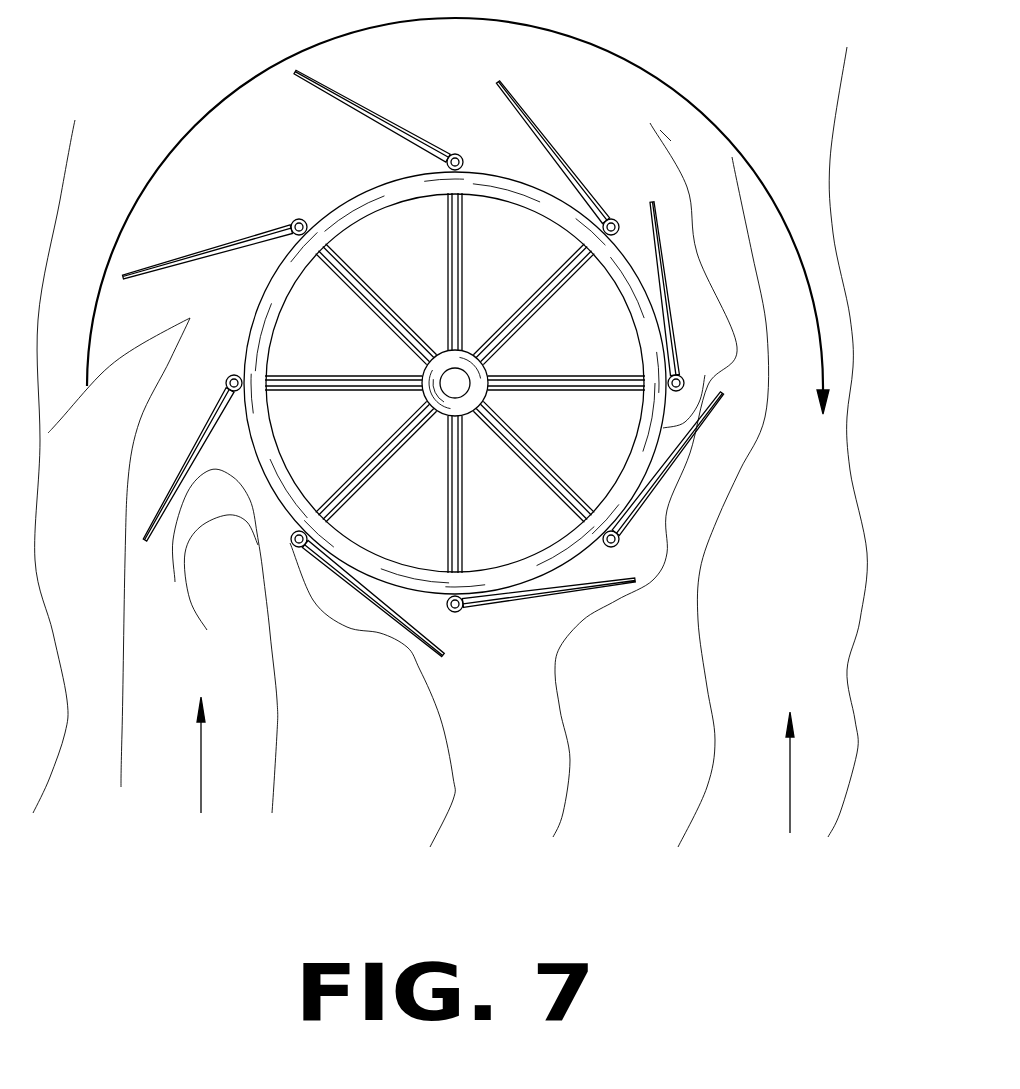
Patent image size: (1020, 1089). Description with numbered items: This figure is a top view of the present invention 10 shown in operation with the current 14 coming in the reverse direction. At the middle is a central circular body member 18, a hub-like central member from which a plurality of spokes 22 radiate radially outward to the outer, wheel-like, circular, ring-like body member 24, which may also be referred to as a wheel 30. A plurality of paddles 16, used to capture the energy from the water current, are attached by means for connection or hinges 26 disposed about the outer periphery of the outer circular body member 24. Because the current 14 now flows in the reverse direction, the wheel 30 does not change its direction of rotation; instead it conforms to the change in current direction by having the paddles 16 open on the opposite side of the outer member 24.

The present invention 10 is at (614, 180).
The current 14 is at (822, 742).
The paddles 16 is at (172, 483).
The central circular body member 18 is at (433, 358).
The spokes 22 is at (528, 372).
The outer circular body member 24 is at (519, 186).
The hinges 26 is at (452, 154).
The wheel 30 is at (705, 375).